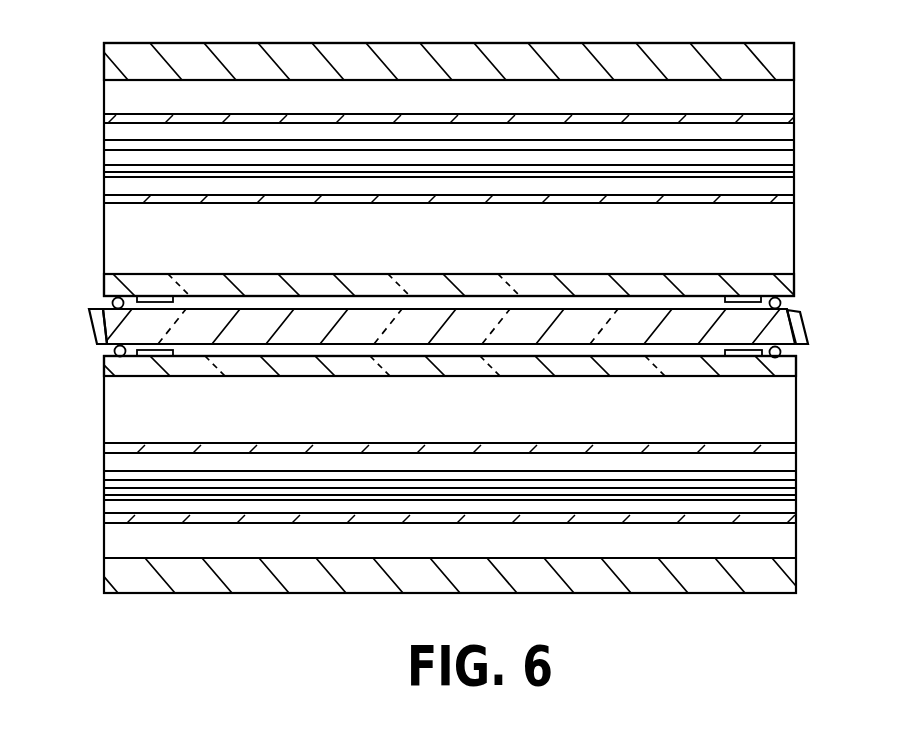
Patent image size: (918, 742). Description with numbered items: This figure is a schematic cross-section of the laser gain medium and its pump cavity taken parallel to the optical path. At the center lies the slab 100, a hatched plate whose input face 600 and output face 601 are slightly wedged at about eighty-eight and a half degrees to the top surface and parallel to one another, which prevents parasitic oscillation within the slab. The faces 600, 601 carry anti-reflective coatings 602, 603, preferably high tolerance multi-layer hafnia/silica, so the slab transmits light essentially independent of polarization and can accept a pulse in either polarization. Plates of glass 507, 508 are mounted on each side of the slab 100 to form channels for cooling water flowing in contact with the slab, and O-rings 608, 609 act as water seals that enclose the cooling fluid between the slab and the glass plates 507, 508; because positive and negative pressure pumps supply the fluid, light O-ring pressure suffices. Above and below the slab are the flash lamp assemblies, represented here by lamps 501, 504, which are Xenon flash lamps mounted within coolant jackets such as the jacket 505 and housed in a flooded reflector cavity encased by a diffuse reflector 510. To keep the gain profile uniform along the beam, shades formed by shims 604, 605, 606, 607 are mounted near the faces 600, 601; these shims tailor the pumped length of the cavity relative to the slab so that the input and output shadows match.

The slab 100 is at (468, 330).
The lamp 501 is at (780, 157).
The lamp 504 is at (103, 487).
The coolant jacket 505 is at (750, 112).
The plate of glass 507 is at (404, 374).
The plate of glass 508 is at (343, 273).
The diffuse reflector 510 is at (502, 43).
The input face 600 is at (60, 352).
The output face 601 is at (832, 339).
The anti-reflective coating 602 is at (93, 323).
The anti-reflective coating 603 is at (800, 315).
The shim 604 is at (747, 297).
The shim 605 is at (745, 357).
The shim 606 is at (158, 297).
The shim 607 is at (147, 357).
The O-ring 608 is at (114, 352).
The O-ring 609 is at (782, 305).